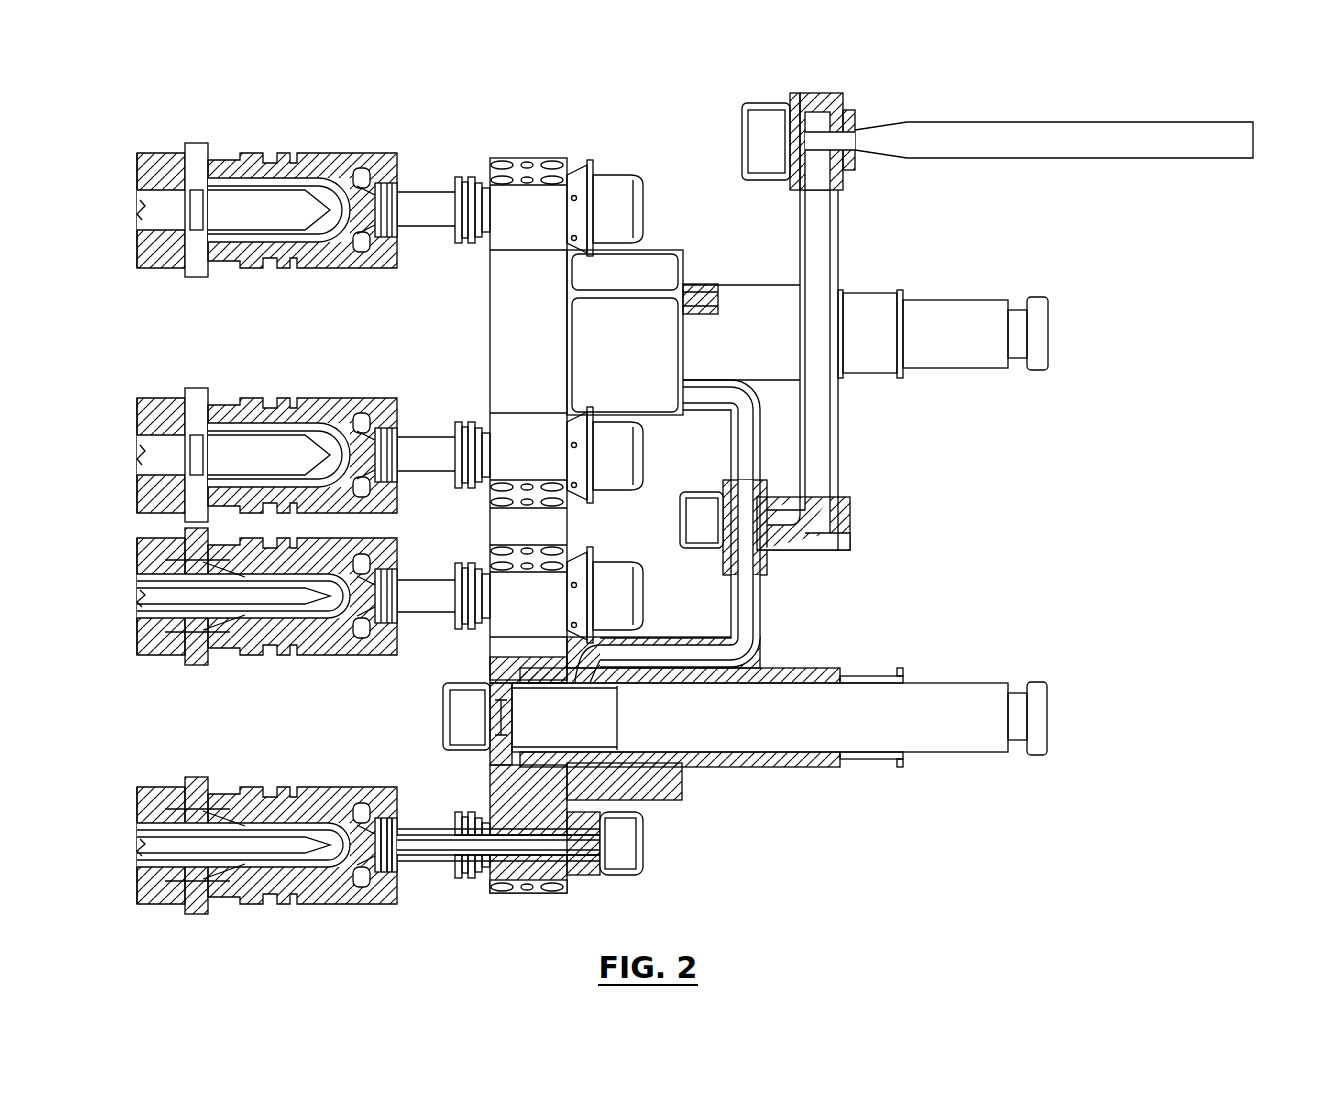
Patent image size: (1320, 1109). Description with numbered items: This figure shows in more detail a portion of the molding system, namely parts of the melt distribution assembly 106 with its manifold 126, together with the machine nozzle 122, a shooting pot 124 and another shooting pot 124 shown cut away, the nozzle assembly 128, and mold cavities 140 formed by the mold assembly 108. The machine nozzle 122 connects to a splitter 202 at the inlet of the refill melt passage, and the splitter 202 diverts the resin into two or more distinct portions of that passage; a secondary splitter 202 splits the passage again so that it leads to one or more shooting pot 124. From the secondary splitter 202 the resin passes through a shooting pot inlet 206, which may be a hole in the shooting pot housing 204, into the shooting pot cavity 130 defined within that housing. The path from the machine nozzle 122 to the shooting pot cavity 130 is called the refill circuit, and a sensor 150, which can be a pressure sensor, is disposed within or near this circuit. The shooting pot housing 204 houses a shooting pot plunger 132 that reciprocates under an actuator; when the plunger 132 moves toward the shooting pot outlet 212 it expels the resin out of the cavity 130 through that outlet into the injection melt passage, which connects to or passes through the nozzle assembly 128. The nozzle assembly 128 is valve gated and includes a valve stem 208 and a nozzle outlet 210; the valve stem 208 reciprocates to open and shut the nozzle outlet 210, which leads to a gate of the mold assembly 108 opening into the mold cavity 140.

The melt distribution assembly 106 is at (1104, 503).
The mold assembly 108 is at (262, 149).
The machine nozzle 122 is at (1175, 138).
The shooting pot 124 is at (948, 374).
The manifold 126 is at (765, 625).
The nozzle assembly 128 is at (483, 877).
The shooting pot cavity 130 is at (535, 708).
The shooting pot plunger 132 is at (990, 362).
The mold cavity 140 is at (258, 874).
The sensor 150 is at (712, 282).
The splitter 202 is at (850, 120).
The shooting pot housing 204 is at (818, 768).
The shooting pot inlet 206 is at (588, 690).
The valve stem 208 is at (561, 893).
The nozzle outlet 210 is at (372, 856).
The shooting pot outlet 212 is at (518, 771).